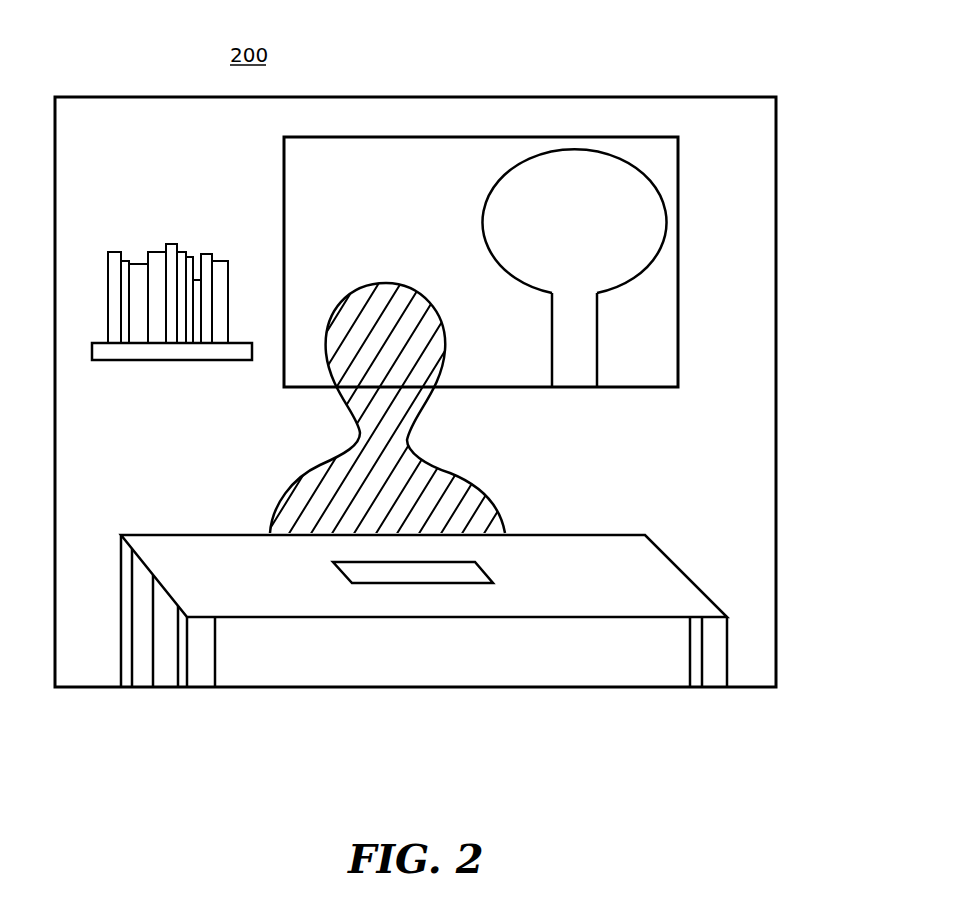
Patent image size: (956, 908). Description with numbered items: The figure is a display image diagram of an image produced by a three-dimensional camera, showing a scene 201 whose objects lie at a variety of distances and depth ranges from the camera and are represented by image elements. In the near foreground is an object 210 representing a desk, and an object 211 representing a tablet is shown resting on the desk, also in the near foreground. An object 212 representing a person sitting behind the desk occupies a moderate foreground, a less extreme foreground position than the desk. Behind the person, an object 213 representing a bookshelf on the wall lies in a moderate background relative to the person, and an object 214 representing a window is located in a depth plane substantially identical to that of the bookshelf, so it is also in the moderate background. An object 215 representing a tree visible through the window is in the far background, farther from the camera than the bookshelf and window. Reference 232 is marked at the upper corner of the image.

The scene 201 is at (185, 97).
The desk object 210 is at (565, 535).
The tablet object 211 is at (486, 583).
The person object 212 is at (440, 472).
The bookshelf object 213 is at (163, 361).
The window object 214 is at (678, 158).
The tree object 215 is at (490, 193).
The image boundary 232 is at (800, 63).